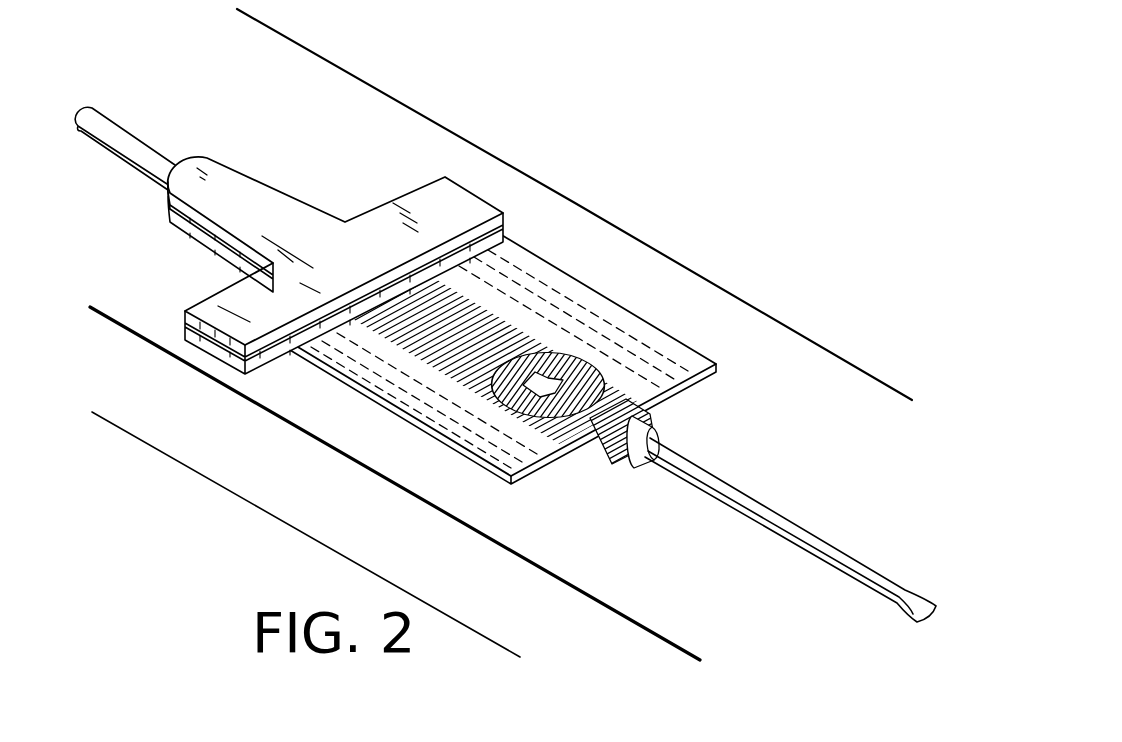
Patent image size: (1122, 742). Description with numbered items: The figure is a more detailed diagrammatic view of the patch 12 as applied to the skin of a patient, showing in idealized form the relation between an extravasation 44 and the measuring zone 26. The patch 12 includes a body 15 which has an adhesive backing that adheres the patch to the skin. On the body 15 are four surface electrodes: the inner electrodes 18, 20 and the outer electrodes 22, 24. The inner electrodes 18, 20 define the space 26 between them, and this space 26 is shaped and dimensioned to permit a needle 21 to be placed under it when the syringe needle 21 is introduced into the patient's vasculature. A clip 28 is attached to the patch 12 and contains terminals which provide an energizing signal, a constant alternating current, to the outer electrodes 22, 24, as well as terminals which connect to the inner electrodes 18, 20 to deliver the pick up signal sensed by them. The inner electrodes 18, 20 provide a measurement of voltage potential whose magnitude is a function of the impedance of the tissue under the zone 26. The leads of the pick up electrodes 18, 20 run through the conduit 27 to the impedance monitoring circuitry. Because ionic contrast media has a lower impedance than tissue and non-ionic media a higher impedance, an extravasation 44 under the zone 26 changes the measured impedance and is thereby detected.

The patch 12 is at (357, 410).
The body 15 is at (672, 348).
The inner electrode 18 is at (585, 433).
The inner electrode 20 is at (602, 442).
The needle 21 is at (570, 352).
The outer electrode 22 is at (658, 391).
The outer electrode 24 is at (521, 466).
The space 26 is at (442, 350).
The conduit 27 is at (140, 148).
The clip 28 is at (307, 232).
The extravasation 44 is at (546, 381).